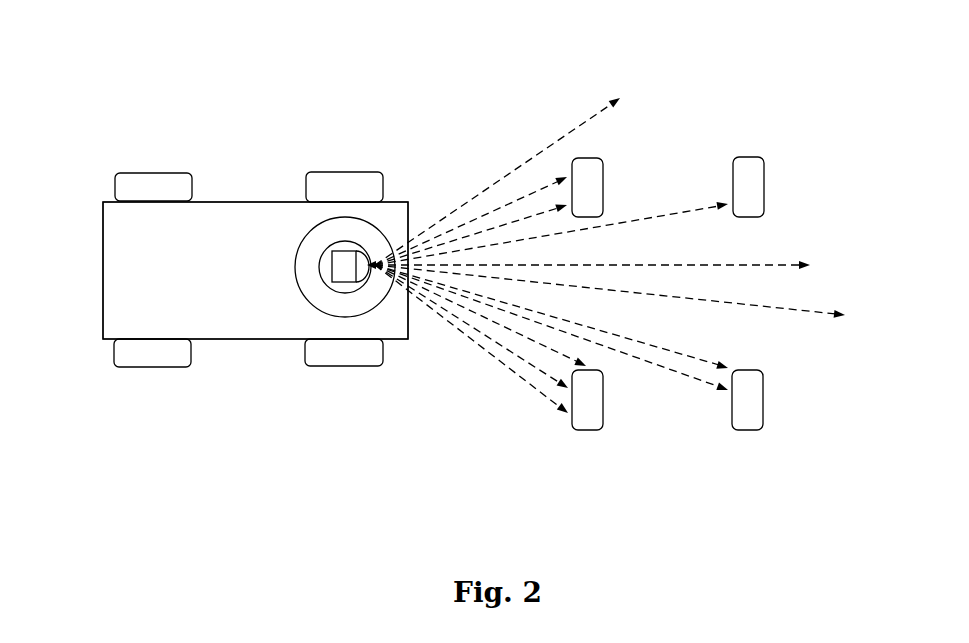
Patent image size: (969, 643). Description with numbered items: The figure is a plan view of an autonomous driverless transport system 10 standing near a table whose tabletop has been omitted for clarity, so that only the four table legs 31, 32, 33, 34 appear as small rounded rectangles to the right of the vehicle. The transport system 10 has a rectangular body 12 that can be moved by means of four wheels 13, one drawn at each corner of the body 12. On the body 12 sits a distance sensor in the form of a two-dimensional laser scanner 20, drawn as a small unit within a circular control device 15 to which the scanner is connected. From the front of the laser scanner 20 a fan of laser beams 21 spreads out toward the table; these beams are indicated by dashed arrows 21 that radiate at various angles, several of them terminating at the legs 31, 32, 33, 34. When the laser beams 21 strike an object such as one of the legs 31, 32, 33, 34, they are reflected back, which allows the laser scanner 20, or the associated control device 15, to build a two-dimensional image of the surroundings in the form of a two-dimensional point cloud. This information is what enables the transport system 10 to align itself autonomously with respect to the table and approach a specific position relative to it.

The autonomous driverless transport system 10 is at (139, 138).
The body 12 is at (118, 308).
The wheels 13 is at (118, 187).
The control device 15 is at (322, 293).
The 2D laser scanner 20 is at (338, 263).
The laser beams 21 is at (523, 153).
The leg 31 is at (592, 403).
The leg 32 is at (747, 415).
The leg 33 is at (593, 200).
The leg 34 is at (755, 182).